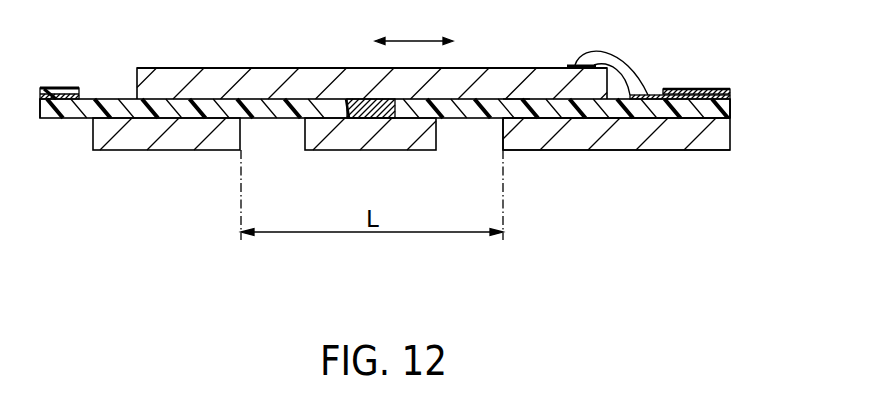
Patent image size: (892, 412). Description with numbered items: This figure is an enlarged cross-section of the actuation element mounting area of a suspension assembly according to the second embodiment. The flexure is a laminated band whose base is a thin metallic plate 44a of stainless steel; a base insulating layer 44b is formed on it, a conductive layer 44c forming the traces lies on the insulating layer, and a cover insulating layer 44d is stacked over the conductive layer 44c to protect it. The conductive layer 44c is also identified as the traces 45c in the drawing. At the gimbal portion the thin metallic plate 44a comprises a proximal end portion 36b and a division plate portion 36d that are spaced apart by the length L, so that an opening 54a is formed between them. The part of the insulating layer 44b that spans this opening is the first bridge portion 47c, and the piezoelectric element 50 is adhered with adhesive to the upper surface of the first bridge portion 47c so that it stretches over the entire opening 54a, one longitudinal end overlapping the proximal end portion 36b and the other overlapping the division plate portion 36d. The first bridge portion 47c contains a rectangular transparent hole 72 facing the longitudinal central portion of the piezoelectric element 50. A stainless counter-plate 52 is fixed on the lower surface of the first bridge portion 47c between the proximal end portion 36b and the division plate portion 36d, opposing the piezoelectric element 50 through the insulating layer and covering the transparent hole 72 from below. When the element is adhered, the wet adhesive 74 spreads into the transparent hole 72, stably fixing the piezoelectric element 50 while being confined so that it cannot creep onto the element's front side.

The piezoelectric element 50 is at (252, 82).
The transparent hole 72 is at (358, 99).
The connection portion 74 is at (381, 111).
The first bridge portion 47c is at (515, 107).
The thin metallic plate 44a is at (658, 145).
The base insulating layer 44b is at (50, 112).
The conductive layer 44c is at (40, 100).
The end portion 45c is at (763, 124).
The cover insulating layer 44d is at (62, 87).
The division plate portion 36d is at (173, 150).
The proximal end portion 36b is at (591, 145).
The counter-plate 52 is at (317, 150).
The opening 54a is at (503, 133).